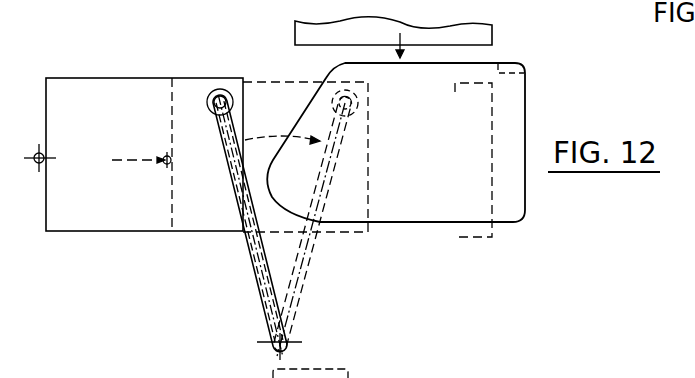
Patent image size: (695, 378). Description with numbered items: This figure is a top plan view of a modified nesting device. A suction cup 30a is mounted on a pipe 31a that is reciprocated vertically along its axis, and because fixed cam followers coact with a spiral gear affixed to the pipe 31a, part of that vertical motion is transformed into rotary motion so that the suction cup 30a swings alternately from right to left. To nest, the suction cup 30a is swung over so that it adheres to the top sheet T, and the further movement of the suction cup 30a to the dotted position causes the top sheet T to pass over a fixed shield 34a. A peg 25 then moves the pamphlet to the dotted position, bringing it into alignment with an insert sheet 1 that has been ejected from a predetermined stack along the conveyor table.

The insert sheet 1 is at (470, 32).
The top sheet T is at (184, 92).
The peg 25 is at (38, 152).
The suction cup 30a is at (221, 96).
The pipe 31a is at (256, 252).
The fixed shield 34a is at (430, 212).